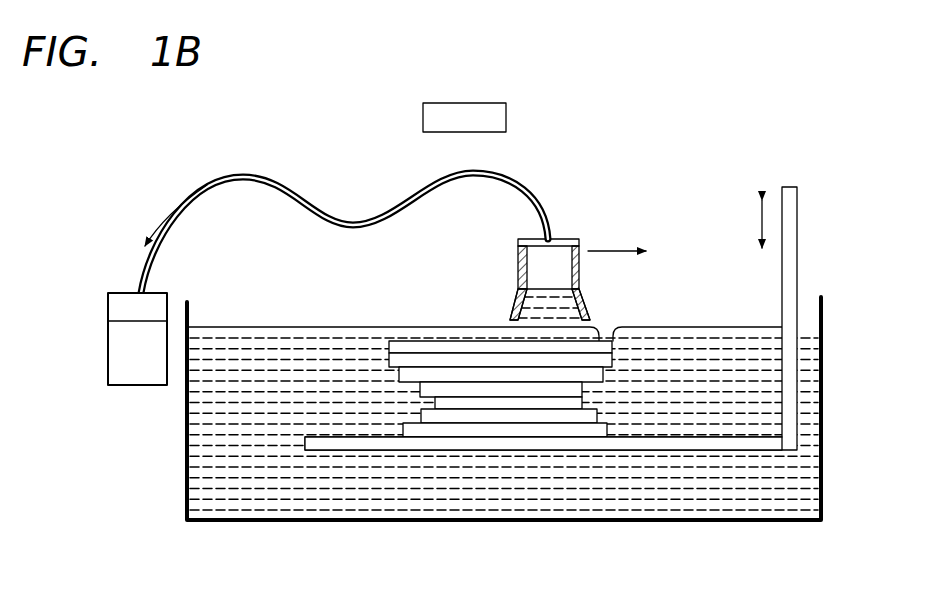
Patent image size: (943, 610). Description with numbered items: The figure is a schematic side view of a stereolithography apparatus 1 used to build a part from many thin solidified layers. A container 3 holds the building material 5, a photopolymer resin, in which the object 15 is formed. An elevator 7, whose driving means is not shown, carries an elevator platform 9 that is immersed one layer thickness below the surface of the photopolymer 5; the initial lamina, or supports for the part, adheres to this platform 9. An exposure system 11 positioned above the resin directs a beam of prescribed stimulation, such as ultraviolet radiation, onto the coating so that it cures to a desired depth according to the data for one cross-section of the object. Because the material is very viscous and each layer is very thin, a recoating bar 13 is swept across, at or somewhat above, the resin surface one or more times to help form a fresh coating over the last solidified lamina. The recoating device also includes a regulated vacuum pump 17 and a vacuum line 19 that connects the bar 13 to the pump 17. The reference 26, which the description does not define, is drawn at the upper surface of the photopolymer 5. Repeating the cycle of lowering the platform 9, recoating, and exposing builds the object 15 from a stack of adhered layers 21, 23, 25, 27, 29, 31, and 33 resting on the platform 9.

The stereolithography apparatus 1 is at (617, 117).
The container 3 is at (823, 312).
The building material 5 is at (738, 346).
The elevator 7 is at (798, 216).
The elevator platform 9 is at (707, 443).
The exposure system 11 is at (423, 115).
The recoating bar 13 is at (581, 235).
The object 15 is at (480, 413).
The regulated vacuum pump 17 is at (115, 292).
The vacuum line 19 is at (235, 173).
The adhered layer 21 is at (403, 432).
The adhered layer 23 is at (420, 414).
The adhered layer 25 is at (434, 403).
The liquid surface 26 is at (222, 327).
The adhered layer 27 is at (583, 393).
The adhered layer 29 is at (603, 381).
The adhered layer 31 is at (388, 358).
The adhered layer 33 is at (388, 345).